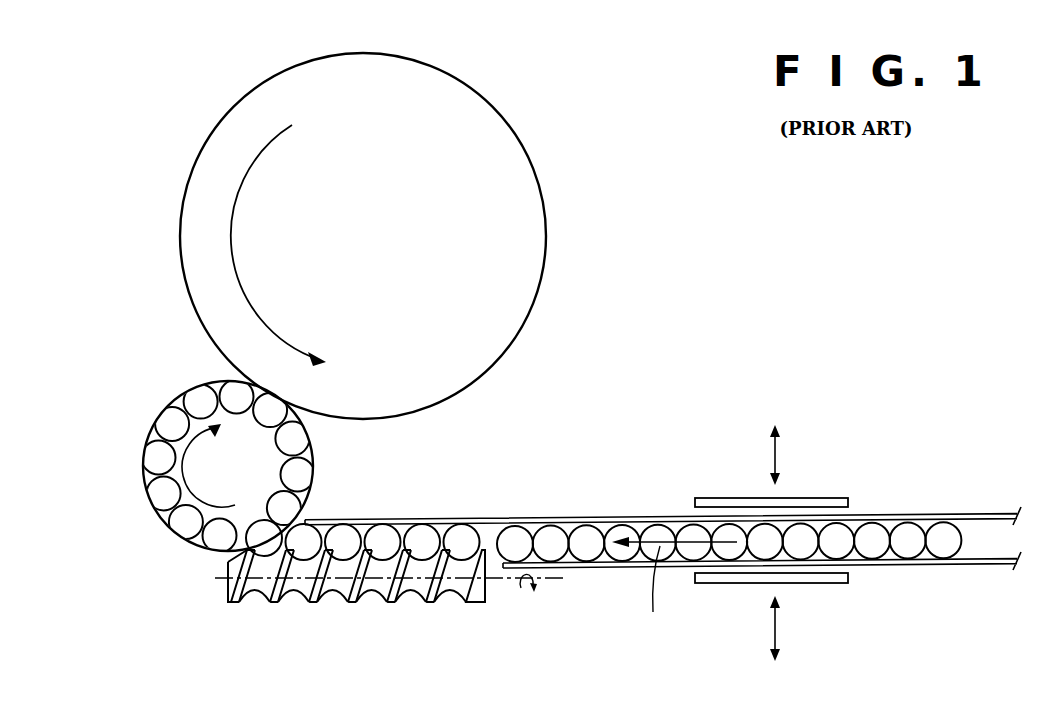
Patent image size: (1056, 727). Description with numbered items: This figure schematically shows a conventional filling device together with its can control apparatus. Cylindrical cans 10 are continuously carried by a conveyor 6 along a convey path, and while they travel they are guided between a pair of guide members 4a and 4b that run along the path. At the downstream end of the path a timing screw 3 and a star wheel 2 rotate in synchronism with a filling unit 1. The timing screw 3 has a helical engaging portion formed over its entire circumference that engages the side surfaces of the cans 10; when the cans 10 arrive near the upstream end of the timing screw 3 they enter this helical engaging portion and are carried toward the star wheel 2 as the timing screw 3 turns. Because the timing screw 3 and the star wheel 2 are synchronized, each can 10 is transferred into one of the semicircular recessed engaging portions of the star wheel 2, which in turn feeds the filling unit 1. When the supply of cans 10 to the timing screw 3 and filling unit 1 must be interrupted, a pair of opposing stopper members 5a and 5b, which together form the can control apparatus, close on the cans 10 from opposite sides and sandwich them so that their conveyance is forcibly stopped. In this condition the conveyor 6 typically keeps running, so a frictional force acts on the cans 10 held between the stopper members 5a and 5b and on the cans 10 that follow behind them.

The filling unit 1 is at (545, 197).
The star wheel 2 is at (275, 473).
The timing screw 3 is at (367, 590).
The cans 10 is at (549, 535).
The guide member 4a is at (943, 515).
The guide member 4b is at (907, 563).
The stopper member 5a is at (822, 498).
The stopper member 5b is at (815, 580).
The conveyor 6 is at (977, 542).